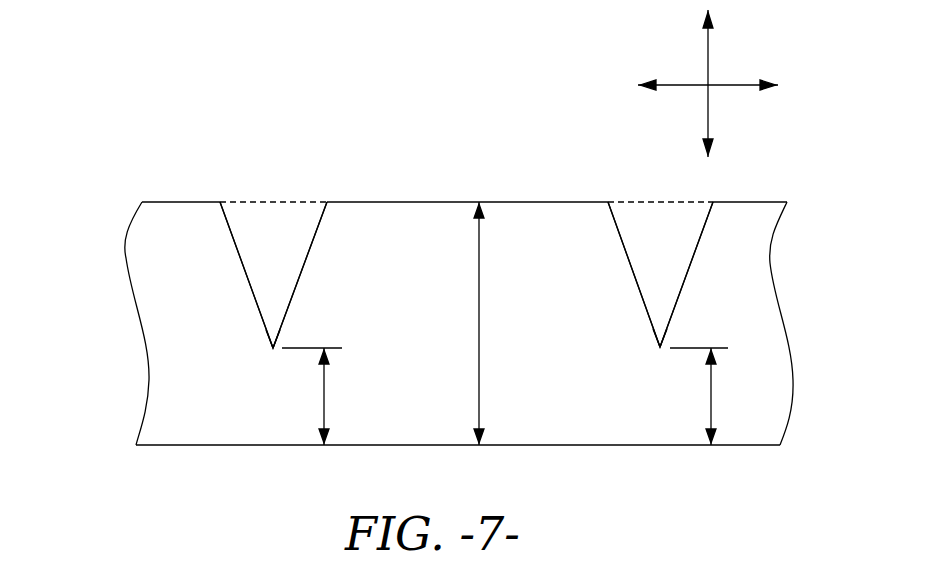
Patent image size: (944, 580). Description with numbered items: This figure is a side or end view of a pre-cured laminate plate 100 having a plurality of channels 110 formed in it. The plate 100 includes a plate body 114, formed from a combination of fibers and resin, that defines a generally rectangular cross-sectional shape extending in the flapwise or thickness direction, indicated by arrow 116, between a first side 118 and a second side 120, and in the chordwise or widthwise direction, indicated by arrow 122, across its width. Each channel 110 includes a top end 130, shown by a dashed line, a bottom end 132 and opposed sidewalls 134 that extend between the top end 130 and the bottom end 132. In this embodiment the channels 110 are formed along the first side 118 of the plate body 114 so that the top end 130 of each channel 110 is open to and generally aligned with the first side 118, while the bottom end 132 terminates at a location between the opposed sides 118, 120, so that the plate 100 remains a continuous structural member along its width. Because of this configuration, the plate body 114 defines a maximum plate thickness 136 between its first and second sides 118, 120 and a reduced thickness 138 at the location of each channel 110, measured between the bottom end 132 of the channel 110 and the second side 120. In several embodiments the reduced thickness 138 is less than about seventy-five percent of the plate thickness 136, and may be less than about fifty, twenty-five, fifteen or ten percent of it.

The pre-cured laminate plate 100 is at (198, 133).
The channel 110 is at (290, 255).
The plate body 114 is at (122, 253).
The arrow indicating flapwise or thickness direction 116 is at (710, 60).
The first side 118 is at (422, 202).
The second side 120 is at (560, 446).
The arrow indicating chordwise or widthwise direction 122 is at (683, 82).
The top end 130 is at (255, 202).
The bottom end 132 is at (272, 352).
The opposed sidewalls 134 is at (248, 287).
The maximum plate thickness 136 is at (483, 318).
The reduced thickness 138 is at (326, 400).